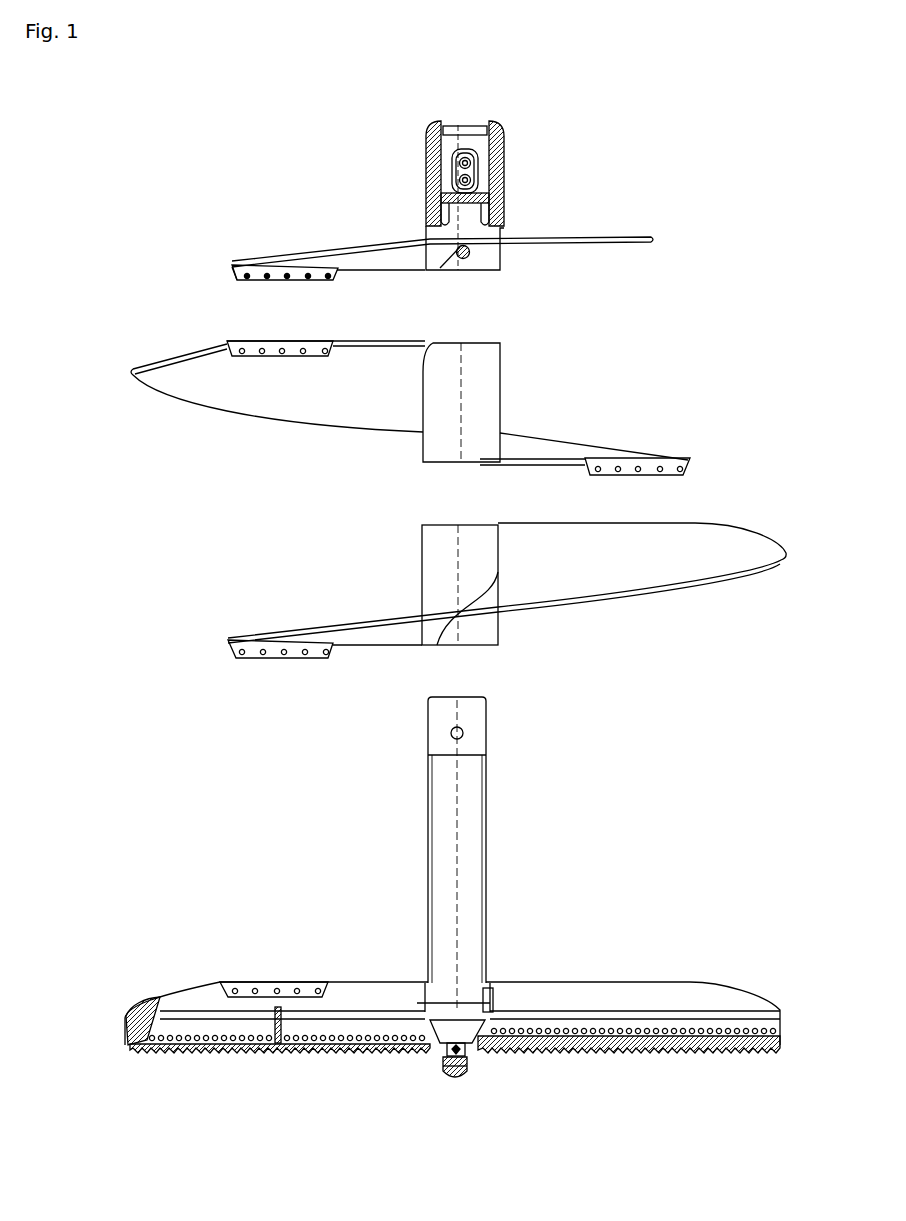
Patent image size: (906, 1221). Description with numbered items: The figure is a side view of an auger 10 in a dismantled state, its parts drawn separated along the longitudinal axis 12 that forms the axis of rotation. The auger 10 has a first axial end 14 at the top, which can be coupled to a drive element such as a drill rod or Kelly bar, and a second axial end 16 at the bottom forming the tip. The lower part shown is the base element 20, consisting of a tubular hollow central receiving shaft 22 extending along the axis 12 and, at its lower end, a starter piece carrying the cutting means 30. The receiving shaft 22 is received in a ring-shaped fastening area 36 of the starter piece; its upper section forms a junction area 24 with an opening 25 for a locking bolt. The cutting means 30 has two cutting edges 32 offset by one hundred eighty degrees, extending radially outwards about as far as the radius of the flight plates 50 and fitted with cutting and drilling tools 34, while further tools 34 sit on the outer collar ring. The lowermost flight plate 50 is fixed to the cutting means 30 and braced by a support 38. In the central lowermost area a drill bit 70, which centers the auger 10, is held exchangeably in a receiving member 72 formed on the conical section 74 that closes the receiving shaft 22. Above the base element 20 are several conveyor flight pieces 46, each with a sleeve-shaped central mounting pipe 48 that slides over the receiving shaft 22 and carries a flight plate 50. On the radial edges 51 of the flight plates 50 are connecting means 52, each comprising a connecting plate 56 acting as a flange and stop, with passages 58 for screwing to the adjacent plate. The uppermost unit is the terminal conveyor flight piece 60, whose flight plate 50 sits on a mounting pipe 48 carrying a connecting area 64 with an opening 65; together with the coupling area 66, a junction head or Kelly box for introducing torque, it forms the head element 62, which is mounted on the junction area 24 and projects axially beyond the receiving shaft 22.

The auger 10 is at (172, 178).
The longitudinal axis 12 is at (439, 853).
The first axial end 14 is at (468, 110).
The second axial end 16 is at (452, 1055).
The base element 20 is at (452, 1014).
The central receiving shaft 22 is at (480, 790).
The junction area 24 is at (478, 724).
The opening 25 is at (450, 734).
The cutting means 30 is at (638, 1020).
The cutting edge 32 is at (184, 1054).
The cutting and/or drilling tools 34 is at (326, 1054).
The fastening area 36 is at (476, 1004).
The support 38 is at (278, 1046).
The conveyor flight piece 46 is at (602, 186).
The central mounting pipe 48 is at (484, 234).
The flight plate 50 is at (374, 262).
The radial edge 51 is at (165, 346).
The connecting means 52 is at (262, 264).
The connecting plate 56 is at (322, 270).
The passage 58 is at (672, 466).
The terminal conveyor flight piece 60 is at (648, 208).
The head element 62 is at (512, 132).
The connecting area 64 is at (492, 262).
The opening 65 is at (462, 262).
The coupling area 66 is at (436, 162).
The drill bit 70 is at (455, 1088).
The receiving member 72 is at (440, 1054).
The conical section 74 is at (470, 1042).